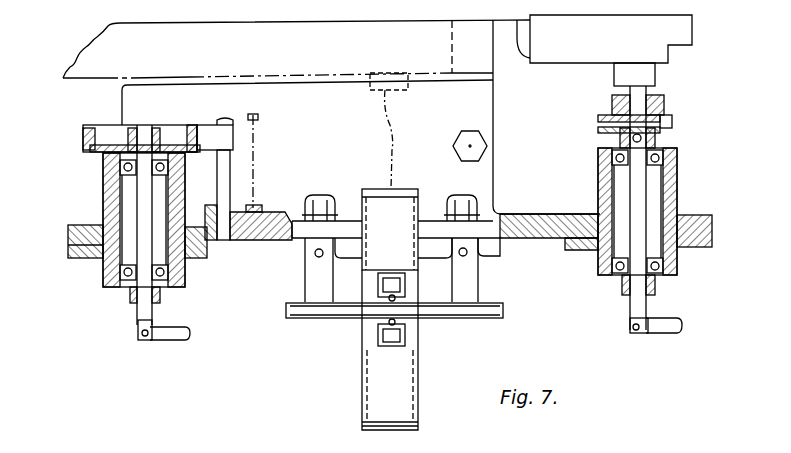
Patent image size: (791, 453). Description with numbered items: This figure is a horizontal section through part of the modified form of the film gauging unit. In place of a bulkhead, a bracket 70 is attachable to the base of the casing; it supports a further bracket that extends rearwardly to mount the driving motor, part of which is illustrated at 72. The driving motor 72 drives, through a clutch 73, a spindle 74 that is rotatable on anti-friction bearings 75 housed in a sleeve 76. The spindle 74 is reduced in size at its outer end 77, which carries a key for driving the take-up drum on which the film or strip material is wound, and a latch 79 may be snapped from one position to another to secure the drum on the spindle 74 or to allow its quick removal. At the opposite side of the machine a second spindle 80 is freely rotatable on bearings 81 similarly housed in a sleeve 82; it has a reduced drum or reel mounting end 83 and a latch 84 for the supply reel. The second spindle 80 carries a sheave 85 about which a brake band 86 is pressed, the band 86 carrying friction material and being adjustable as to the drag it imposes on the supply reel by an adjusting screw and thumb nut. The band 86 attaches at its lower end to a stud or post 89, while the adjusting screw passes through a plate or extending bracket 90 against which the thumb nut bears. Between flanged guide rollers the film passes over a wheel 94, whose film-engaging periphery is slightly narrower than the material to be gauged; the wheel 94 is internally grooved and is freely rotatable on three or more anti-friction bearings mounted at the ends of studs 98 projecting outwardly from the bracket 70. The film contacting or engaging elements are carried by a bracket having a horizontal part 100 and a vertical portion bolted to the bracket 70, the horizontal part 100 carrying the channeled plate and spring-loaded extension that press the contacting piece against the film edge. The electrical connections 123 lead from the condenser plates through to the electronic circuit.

The bracket 70 is at (536, 228).
The driving motor 72 is at (660, 50).
The clutch 73 is at (676, 137).
The spindle 74 is at (640, 212).
The anti-friction bearings 75 is at (678, 158).
The sleeve 76 is at (680, 258).
The outer end of spindle 77 is at (640, 311).
The latch 79 is at (660, 332).
The second spindle 80 is at (145, 250).
The bearings 81 is at (113, 167).
The sleeve 82 is at (103, 207).
The reel mounting end 83 is at (145, 323).
The latch 84 is at (165, 336).
The sheave 85 is at (168, 130).
The brake band 86 is at (200, 135).
The stud or post 89 is at (222, 172).
The plate or extending bracket 90 is at (258, 137).
The wheel 94 is at (290, 312).
The studs 98 is at (466, 283).
The horizontal part of bracket 100 is at (368, 340).
The electrical connections 123 is at (395, 145).